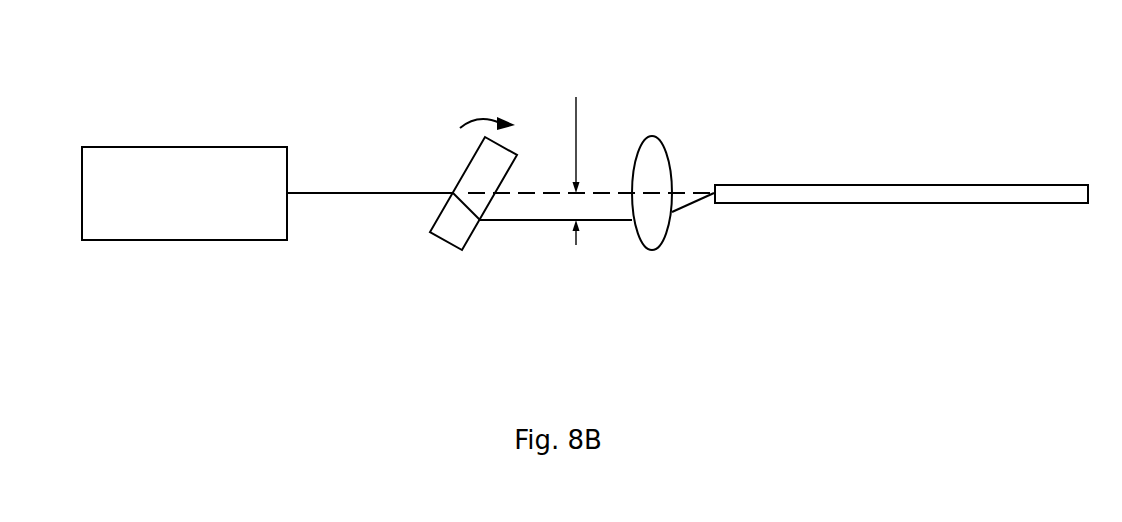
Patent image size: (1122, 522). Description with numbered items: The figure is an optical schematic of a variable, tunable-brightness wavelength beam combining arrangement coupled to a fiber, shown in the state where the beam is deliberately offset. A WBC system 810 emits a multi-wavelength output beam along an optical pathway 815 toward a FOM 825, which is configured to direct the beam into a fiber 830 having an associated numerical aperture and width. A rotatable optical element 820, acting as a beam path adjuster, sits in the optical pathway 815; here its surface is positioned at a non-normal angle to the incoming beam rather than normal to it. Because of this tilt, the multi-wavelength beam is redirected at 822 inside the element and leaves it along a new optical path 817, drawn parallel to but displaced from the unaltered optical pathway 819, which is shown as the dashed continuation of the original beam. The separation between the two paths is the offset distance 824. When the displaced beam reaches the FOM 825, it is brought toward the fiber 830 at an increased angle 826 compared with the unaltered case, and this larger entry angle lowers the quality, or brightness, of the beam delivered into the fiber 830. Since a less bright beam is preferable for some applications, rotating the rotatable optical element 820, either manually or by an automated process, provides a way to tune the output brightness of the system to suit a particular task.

The WBC system 810 is at (153, 140).
The optical pathway 815 is at (378, 197).
The new optical path 817 is at (558, 220).
The unaltered optical pathway 819 is at (548, 192).
The rotatable optical element 820 is at (460, 178).
The beam redirection point 822 is at (481, 244).
The offset distance 824 is at (572, 157).
The FOM 825 is at (652, 134).
The entry angle 826 is at (740, 262).
The fiber 830 is at (845, 184).